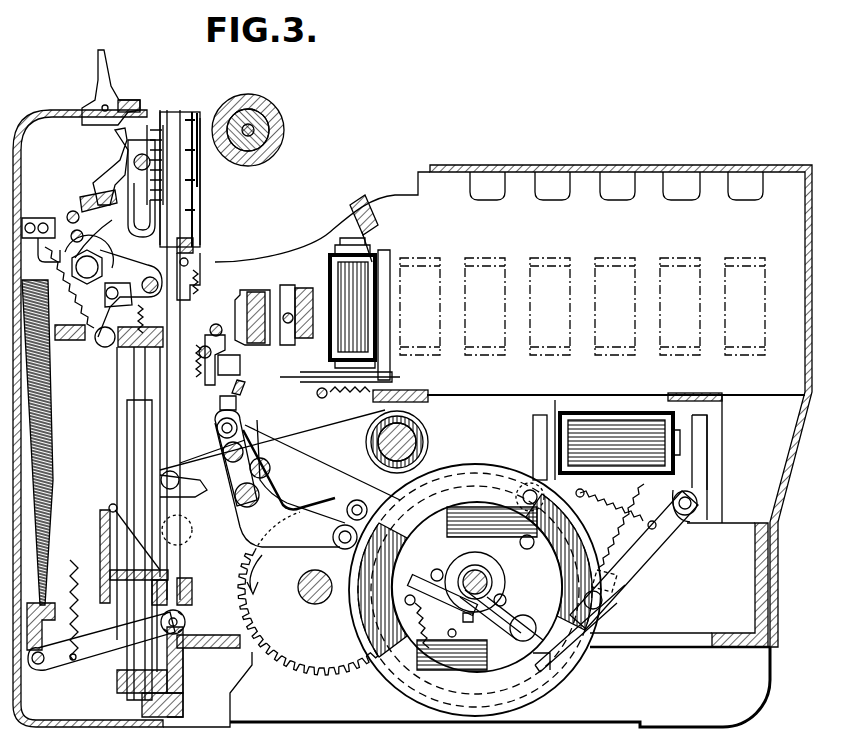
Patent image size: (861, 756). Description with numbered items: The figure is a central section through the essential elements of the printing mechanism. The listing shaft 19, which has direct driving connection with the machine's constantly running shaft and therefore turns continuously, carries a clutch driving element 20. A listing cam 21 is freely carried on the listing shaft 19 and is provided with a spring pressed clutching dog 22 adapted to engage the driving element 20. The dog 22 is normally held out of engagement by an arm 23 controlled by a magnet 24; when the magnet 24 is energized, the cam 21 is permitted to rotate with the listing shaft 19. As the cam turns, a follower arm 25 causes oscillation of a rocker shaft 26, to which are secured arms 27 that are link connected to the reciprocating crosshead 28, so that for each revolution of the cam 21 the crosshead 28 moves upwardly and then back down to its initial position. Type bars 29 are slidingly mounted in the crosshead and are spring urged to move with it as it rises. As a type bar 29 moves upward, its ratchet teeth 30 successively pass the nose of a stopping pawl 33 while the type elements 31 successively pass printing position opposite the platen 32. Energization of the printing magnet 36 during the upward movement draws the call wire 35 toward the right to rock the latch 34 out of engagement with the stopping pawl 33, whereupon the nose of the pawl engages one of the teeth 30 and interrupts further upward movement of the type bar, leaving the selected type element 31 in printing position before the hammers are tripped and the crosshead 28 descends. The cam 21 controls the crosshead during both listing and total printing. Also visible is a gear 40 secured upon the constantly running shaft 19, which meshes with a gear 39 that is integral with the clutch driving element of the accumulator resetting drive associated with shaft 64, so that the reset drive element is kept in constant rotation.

The listing shaft 19 is at (480, 595).
The clutch driving element 20 is at (481, 546).
The listing cam 21 is at (563, 667).
The clutching dog 22 is at (462, 632).
The arm 23 is at (650, 545).
The magnet 24 is at (615, 405).
The follower arm 25 is at (332, 500).
The rocker shaft 26 is at (407, 440).
The arms 27 is at (218, 480).
The crosshead 28 is at (112, 518).
The type bar 29 is at (170, 253).
The ratchet teeth 30 is at (213, 423).
The type elements 31 is at (205, 178).
The platen 32 is at (284, 128).
The stopping pawl 33 is at (213, 355).
The latch 34 is at (265, 297).
The call wire 35 is at (353, 377).
The printing magnet 36 is at (355, 290).
The gear 39 is at (267, 617).
The gear 40 is at (374, 672).
The shaft 64 is at (313, 598).